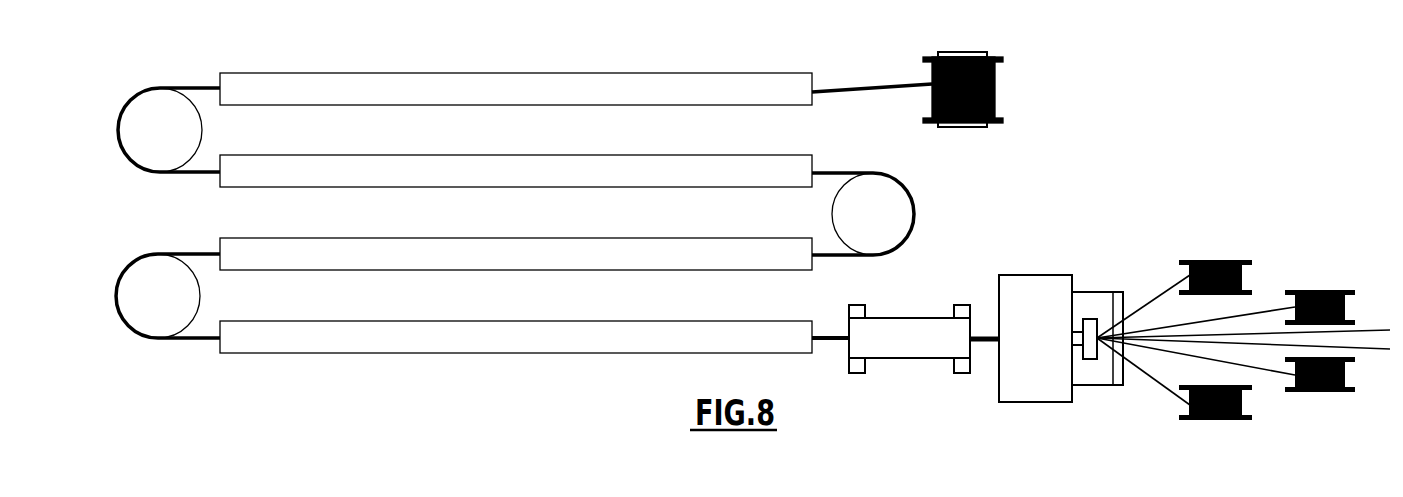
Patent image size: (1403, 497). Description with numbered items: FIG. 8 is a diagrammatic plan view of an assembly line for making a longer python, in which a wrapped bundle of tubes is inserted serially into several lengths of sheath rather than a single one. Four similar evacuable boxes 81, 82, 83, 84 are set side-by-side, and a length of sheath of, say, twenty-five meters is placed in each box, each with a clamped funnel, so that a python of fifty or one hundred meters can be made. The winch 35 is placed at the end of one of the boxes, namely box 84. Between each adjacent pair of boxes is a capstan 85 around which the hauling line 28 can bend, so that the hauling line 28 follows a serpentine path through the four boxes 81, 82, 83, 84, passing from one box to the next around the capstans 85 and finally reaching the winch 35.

The evacuable box 81 is at (375, 331).
The evacuable box 82 is at (375, 248).
The evacuable box 83 is at (375, 166).
The evacuable box 84 is at (375, 84).
The capstan 85 is at (143, 112).
The hauling line 28 is at (884, 83).
The winch 35 is at (995, 81).